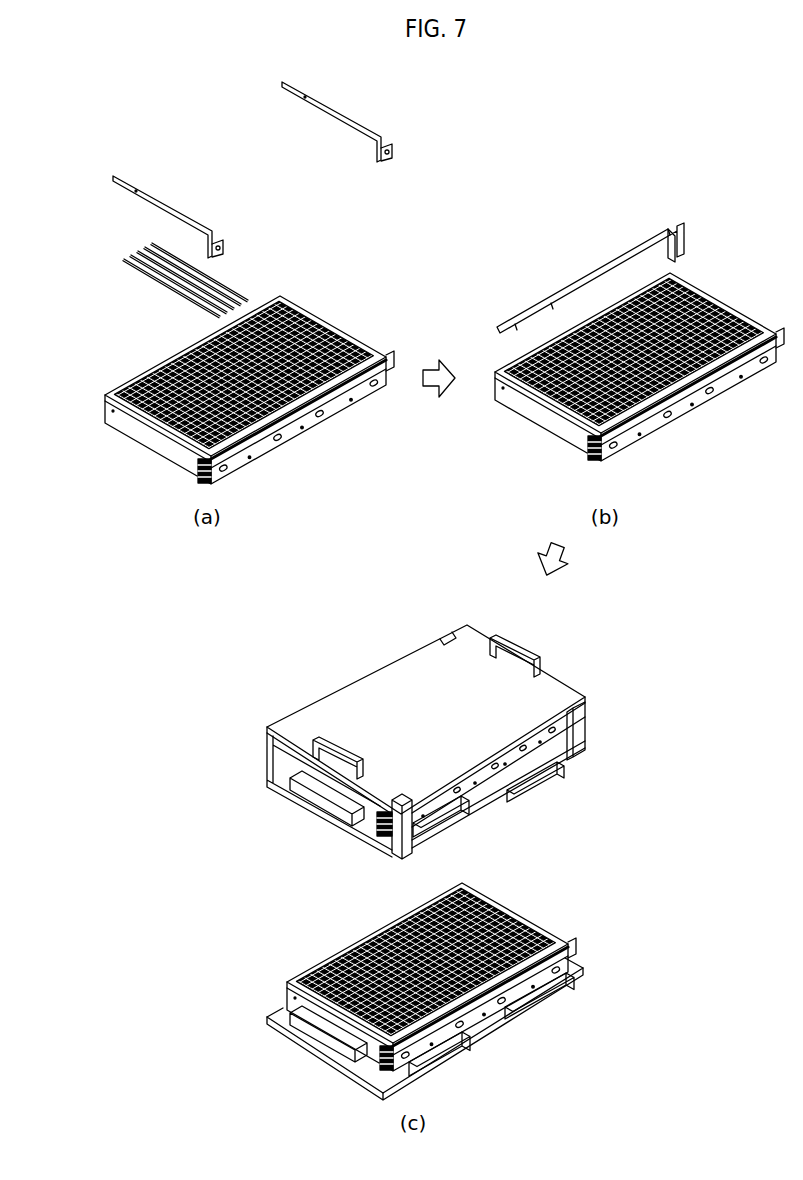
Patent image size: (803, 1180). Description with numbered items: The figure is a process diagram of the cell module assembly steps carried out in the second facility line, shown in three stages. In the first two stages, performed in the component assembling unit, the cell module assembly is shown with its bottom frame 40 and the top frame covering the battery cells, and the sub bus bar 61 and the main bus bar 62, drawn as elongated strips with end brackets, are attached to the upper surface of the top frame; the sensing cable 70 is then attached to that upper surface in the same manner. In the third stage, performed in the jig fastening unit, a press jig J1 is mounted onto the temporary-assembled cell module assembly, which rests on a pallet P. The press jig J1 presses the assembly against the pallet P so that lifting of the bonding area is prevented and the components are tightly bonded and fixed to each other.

The bottom frame 40 is at (152, 438).
The sub bus bar 61 is at (125, 258).
The main bus bar 62 is at (333, 110).
The sensing cable 70 is at (587, 279).
The press jig J1 is at (587, 723).
The pallet P is at (566, 990).